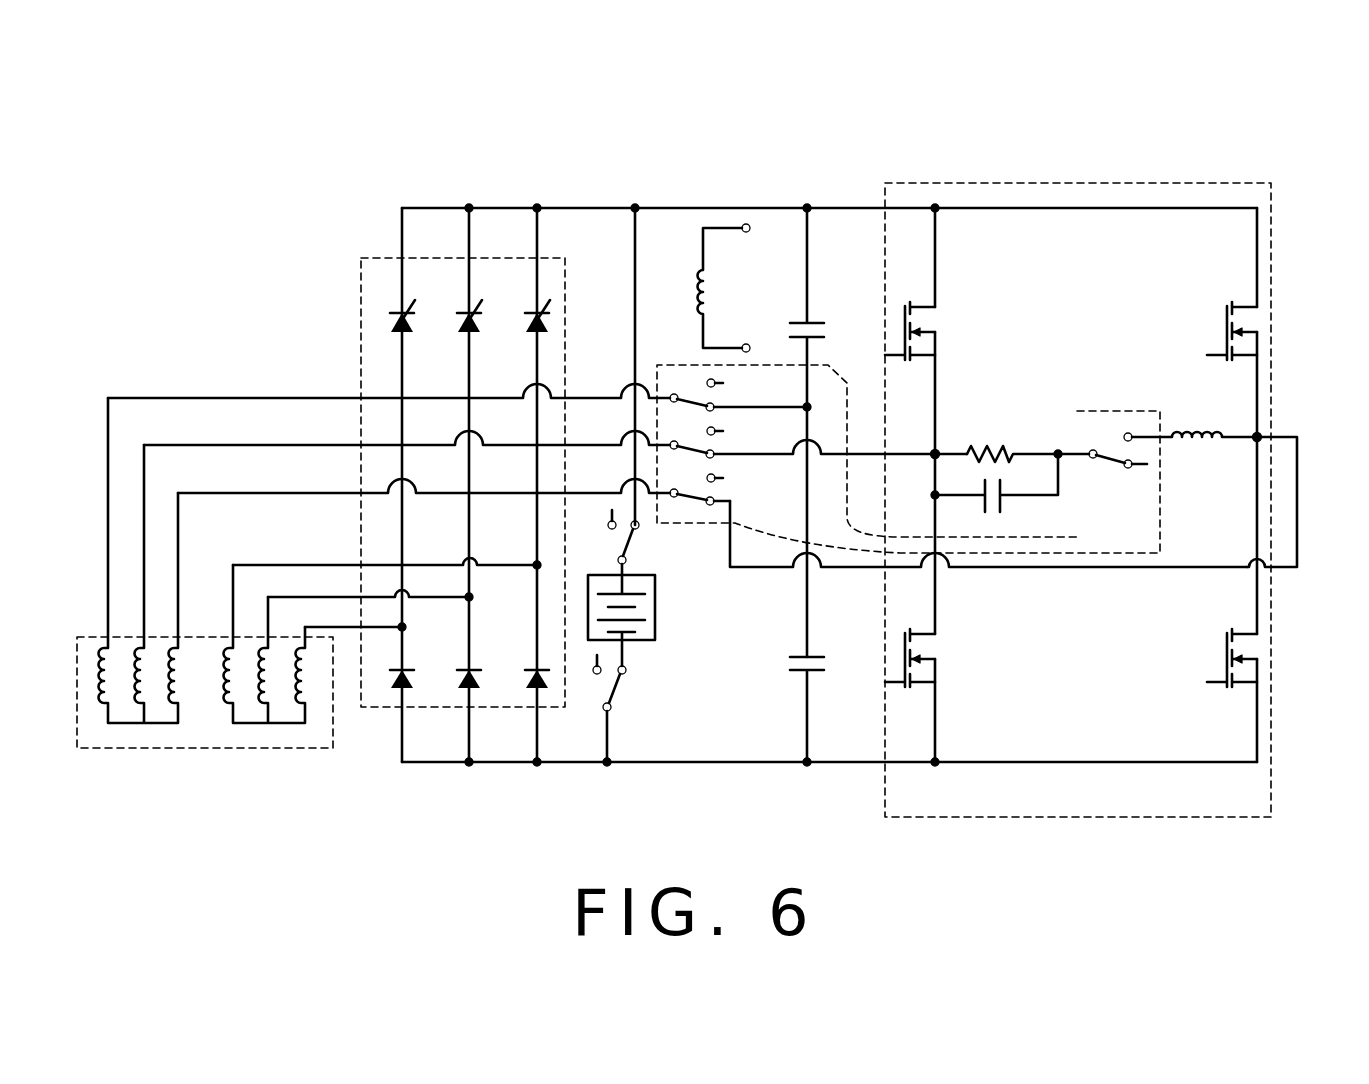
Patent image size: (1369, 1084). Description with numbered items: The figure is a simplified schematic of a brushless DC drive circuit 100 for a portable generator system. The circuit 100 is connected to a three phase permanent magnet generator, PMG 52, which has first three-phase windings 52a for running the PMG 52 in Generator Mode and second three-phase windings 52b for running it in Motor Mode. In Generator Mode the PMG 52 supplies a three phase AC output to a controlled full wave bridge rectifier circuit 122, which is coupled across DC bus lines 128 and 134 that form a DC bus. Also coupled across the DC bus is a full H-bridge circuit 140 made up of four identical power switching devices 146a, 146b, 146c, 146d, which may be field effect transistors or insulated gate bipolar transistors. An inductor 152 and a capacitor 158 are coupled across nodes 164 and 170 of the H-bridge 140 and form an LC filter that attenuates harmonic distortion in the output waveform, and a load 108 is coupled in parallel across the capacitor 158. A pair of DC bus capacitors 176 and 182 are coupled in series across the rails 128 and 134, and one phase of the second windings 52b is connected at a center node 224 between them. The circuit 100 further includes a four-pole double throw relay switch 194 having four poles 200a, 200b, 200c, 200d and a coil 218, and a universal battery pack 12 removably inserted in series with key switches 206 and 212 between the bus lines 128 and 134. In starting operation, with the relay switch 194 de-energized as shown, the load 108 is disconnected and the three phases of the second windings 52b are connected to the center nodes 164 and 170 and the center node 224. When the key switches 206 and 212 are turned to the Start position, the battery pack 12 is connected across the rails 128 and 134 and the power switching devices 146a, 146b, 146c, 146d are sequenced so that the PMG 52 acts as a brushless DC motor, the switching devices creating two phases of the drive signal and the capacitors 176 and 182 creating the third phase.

The brushless DC drive circuit 100 is at (1102, 122).
The controlled full wave bridge rectifier circuit 122 is at (361, 292).
The DC bus line 128 is at (757, 208).
The DC bus line 134 is at (750, 762).
The coil 218 is at (700, 272).
The DC bus capacitor 176 is at (822, 323).
The DC bus capacitor 182 is at (812, 672).
The center node of the DC bus capacitance 224 is at (813, 392).
The full H-bridge circuit 140 is at (1280, 245).
The power switching device 146a is at (940, 340).
The power switching device 146b is at (1228, 650).
The power switching device 146c is at (1228, 322).
The power switching device 146d is at (938, 668).
The node 164 is at (938, 453).
The load 108 is at (993, 440).
The capacitor 158 is at (985, 488).
The inductor 152 is at (1197, 430).
The node 170 is at (1258, 435).
The pole 200a is at (725, 384).
The pole 200b is at (725, 432).
The pole 200c is at (725, 480).
The pole 200d is at (1110, 457).
The key switch 212 is at (630, 540).
The key switch 206 is at (632, 698).
The universal battery pack 12 is at (655, 640).
The 4-pole relay switch 194 is at (703, 527).
The PMG 52 is at (190, 750).
The first 3-phase windings 52a is at (293, 725).
The second 3-phase windings 52b is at (133, 725).